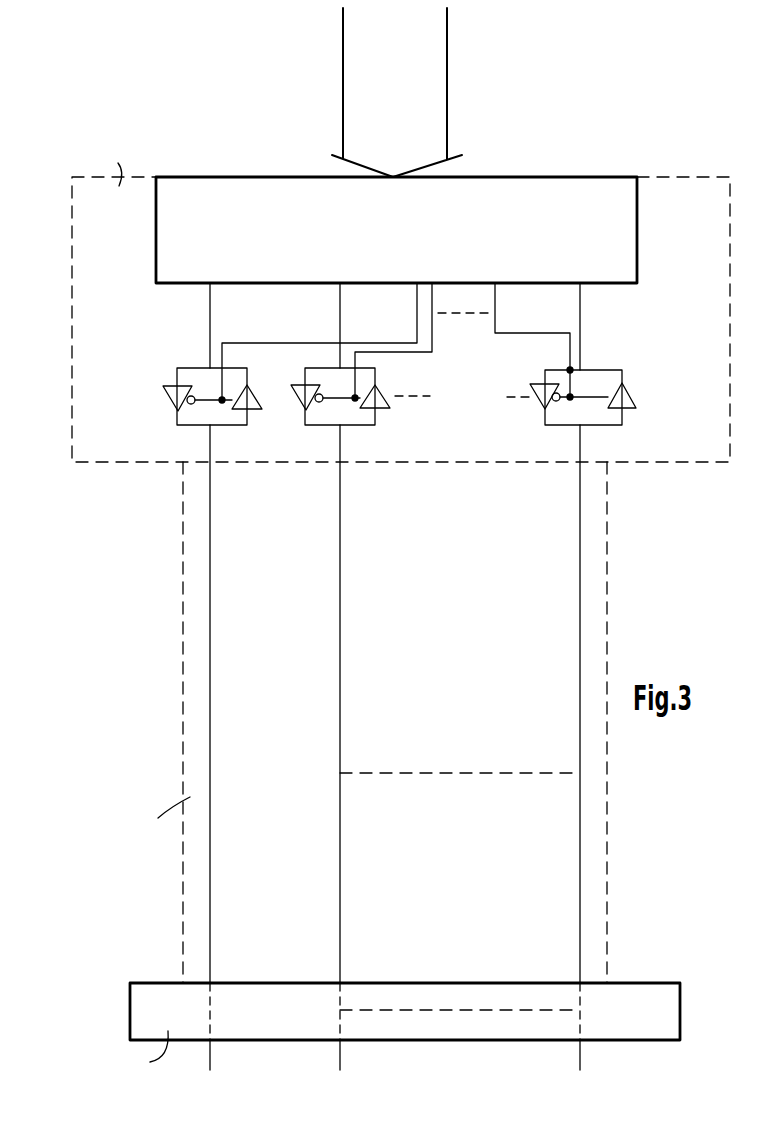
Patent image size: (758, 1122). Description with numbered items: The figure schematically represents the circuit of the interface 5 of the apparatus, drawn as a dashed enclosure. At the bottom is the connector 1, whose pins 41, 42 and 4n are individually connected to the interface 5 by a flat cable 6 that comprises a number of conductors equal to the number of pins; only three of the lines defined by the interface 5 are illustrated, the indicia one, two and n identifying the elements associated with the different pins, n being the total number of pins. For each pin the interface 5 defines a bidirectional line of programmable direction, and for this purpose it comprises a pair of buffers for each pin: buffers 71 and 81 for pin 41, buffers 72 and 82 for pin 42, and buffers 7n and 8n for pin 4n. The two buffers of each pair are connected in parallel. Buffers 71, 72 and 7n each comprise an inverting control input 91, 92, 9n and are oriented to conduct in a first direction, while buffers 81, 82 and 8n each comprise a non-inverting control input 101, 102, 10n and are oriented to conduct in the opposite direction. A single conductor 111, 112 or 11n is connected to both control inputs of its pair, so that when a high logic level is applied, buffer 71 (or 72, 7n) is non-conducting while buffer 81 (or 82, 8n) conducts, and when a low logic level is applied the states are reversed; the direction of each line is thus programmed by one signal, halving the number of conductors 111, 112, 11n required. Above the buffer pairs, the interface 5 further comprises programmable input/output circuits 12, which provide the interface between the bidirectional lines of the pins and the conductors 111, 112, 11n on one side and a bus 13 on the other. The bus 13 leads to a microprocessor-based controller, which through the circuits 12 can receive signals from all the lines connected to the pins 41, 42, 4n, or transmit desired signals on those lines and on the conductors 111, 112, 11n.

The connector 1 is at (135, 1000).
The pin 41 is at (207, 1063).
The pin 42 is at (338, 1063).
The pin 4n is at (580, 1063).
The interface 5 is at (90, 299).
The flat cable 6 is at (183, 611).
The buffer 71 is at (165, 396).
The buffer 72 is at (292, 391).
The buffer 7n is at (541, 385).
The buffer 81 is at (260, 411).
The buffer 82 is at (386, 411).
The buffer 8n is at (630, 395).
The inverting control input 91 is at (200, 394).
The inverting control input 92 is at (333, 394).
The inverting control input 9n is at (561, 408).
The non-inverting control input 101 is at (226, 405).
The non-inverting control input 102 is at (362, 403).
The non-inverting control input 10n is at (595, 397).
The conductor 111 is at (416, 306).
The conductor 112 is at (434, 333).
The conductor 11n is at (495, 310).
The programmable input/output circuits 12 is at (156, 238).
The bus 13 is at (447, 86).